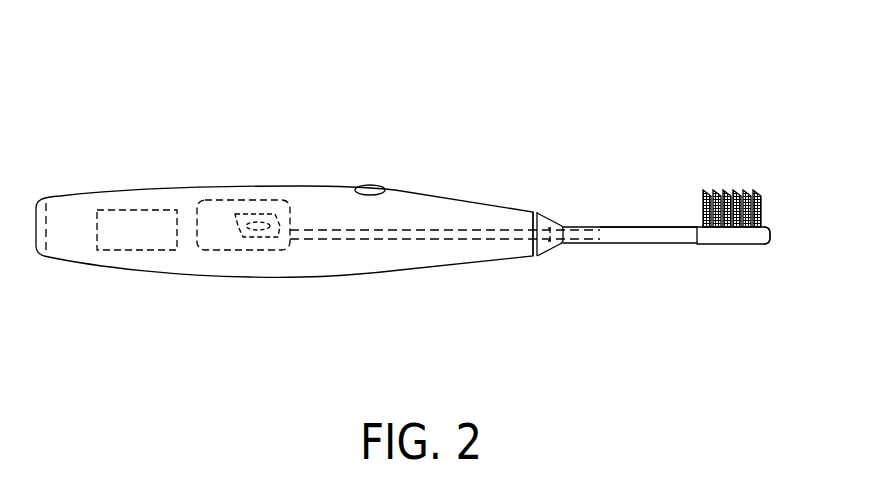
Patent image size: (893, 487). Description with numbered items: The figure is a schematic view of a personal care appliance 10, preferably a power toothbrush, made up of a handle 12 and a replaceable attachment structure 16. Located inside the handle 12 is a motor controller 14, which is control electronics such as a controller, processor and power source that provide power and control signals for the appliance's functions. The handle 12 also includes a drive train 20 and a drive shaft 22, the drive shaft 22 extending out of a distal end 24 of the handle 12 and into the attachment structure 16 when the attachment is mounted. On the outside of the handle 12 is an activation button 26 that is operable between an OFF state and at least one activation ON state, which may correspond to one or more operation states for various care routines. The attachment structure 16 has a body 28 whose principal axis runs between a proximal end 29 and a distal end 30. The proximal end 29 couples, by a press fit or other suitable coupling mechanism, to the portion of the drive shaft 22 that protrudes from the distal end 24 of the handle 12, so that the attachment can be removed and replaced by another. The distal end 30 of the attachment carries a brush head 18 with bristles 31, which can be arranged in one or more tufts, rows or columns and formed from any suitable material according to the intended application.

The personal care appliance 10 is at (108, 94).
The handle 12 is at (208, 274).
The motor controller 14 is at (147, 210).
The attachment structure 16 is at (630, 244).
The brush head 18 is at (722, 244).
The drive train 20 is at (218, 200).
The drive shaft 22 is at (460, 240).
The distal end of the handle 24 is at (558, 266).
The activation button 26 is at (370, 186).
The body of the attachment 28 is at (663, 227).
The proximal end of the attachment 29 is at (557, 206).
The distal end of the attachment 30 is at (774, 256).
The bristles 31 is at (726, 192).